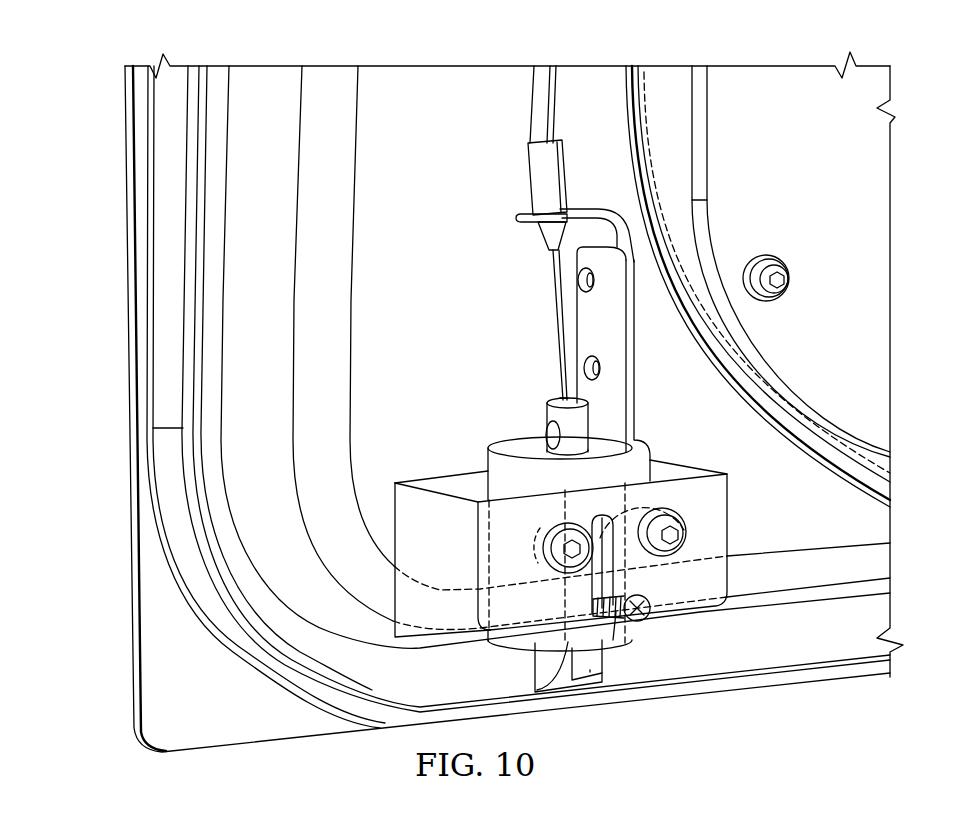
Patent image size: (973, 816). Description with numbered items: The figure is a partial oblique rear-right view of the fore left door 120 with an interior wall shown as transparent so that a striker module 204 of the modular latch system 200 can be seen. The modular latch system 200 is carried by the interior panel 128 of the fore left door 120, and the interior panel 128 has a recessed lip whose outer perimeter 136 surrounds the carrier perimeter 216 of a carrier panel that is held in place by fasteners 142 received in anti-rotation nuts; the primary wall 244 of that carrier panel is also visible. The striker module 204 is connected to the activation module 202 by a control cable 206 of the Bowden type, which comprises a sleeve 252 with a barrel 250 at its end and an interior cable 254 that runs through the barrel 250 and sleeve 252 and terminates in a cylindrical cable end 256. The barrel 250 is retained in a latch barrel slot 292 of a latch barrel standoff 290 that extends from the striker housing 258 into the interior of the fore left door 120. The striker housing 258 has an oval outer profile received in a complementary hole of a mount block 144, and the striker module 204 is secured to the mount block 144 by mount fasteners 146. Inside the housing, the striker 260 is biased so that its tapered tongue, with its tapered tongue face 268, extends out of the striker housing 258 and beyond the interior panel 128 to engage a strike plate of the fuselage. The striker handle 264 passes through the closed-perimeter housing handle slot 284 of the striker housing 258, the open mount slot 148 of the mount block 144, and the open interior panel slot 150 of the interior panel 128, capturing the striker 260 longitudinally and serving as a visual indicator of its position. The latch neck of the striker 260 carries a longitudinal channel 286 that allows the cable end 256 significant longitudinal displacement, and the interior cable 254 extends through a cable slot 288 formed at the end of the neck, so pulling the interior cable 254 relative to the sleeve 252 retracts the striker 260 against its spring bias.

The fore left door 120 is at (156, 627).
The interior panel 128 is at (265, 92).
The outer perimeter 136 is at (708, 200).
The fasteners 142 is at (790, 284).
The mount block 144 is at (722, 508).
The mount fasteners 146 is at (556, 552).
The mount slot 148 is at (615, 548).
The interior panel slot 150 is at (620, 620).
The modular latch system 200 is at (412, 238).
The activation module 202 is at (866, 452).
The striker module 204 is at (488, 464).
The control cable 206 is at (627, 107).
The carrier perimeter 216 is at (708, 126).
The primary wall 244 is at (868, 335).
The barrel 250 is at (530, 180).
The sleeve 252 is at (533, 125).
The interior cable 254 is at (554, 296).
The cable end 256 is at (546, 430).
The striker housing 258 is at (497, 477).
The striker 260 is at (543, 662).
The striker handle 264 is at (613, 640).
The tapered tongue face 268 is at (590, 670).
The housing handle slot 284 is at (660, 463).
The longitudinal channel 286 is at (557, 452).
The cable slot 288 is at (565, 398).
The latch barrel standoff 290 is at (612, 344).
The latch barrel slot 292 is at (521, 218).